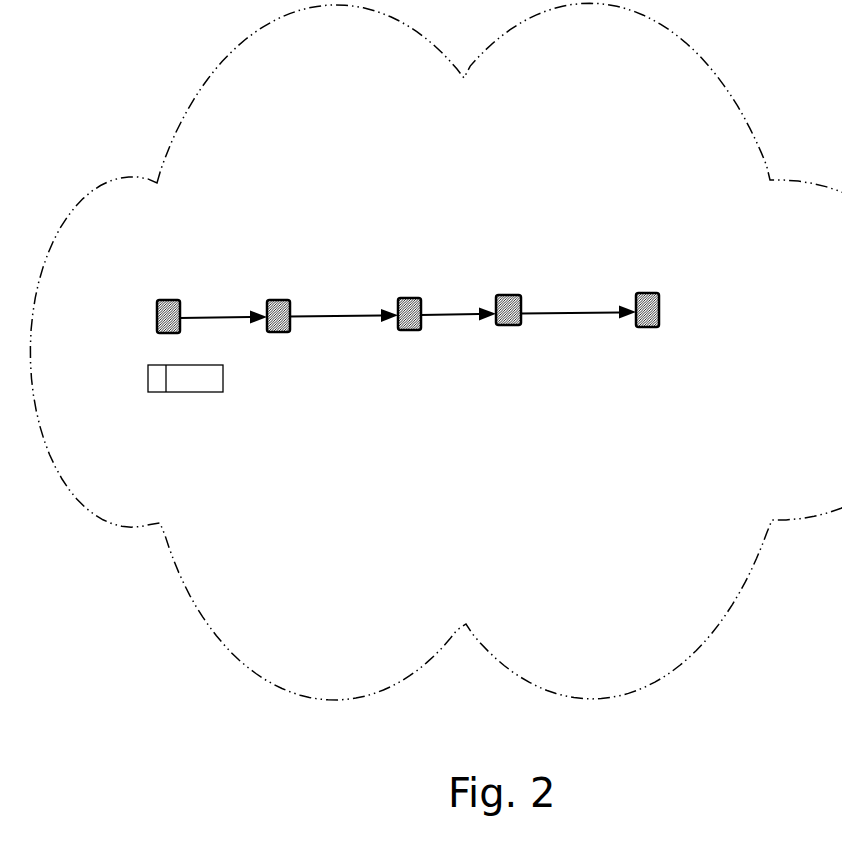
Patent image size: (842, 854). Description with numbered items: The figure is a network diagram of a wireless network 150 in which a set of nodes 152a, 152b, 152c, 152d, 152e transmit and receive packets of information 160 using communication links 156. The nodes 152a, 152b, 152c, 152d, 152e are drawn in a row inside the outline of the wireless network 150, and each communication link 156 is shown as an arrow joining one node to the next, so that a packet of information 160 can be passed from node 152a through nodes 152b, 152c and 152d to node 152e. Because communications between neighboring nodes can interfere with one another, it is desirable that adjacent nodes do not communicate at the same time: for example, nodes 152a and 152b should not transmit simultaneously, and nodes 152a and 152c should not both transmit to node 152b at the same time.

The wireless network 150 is at (757, 135).
The node 152a is at (178, 295).
The node 152b is at (268, 332).
The node 152c is at (398, 325).
The node 152d is at (499, 327).
The node 152e is at (669, 310).
The communication link 156 is at (212, 310).
The packet of information 160 is at (185, 392).